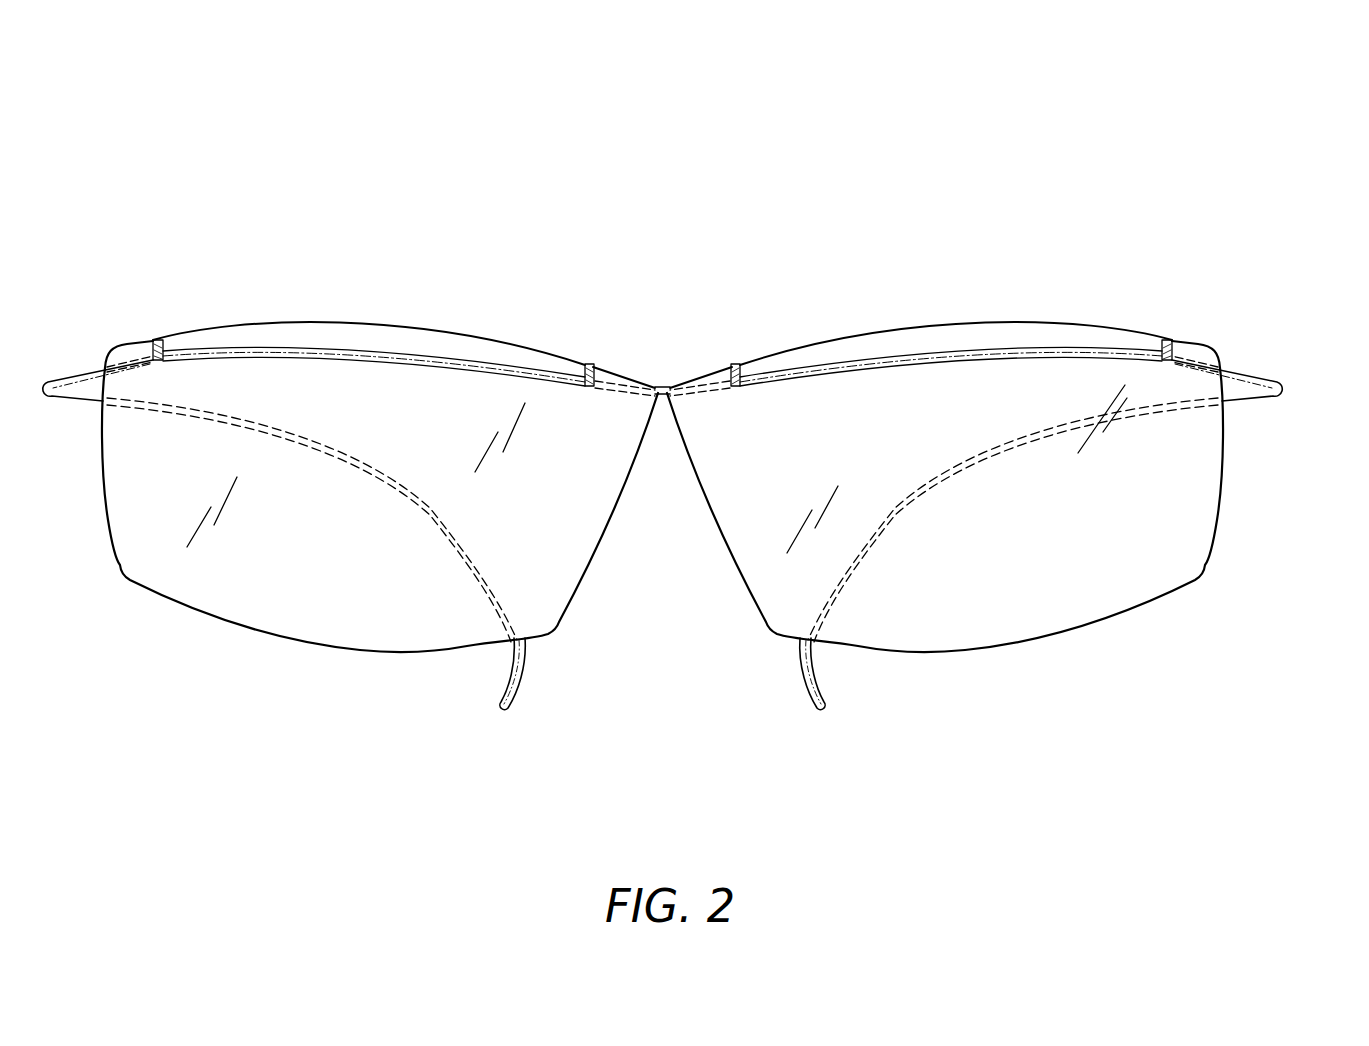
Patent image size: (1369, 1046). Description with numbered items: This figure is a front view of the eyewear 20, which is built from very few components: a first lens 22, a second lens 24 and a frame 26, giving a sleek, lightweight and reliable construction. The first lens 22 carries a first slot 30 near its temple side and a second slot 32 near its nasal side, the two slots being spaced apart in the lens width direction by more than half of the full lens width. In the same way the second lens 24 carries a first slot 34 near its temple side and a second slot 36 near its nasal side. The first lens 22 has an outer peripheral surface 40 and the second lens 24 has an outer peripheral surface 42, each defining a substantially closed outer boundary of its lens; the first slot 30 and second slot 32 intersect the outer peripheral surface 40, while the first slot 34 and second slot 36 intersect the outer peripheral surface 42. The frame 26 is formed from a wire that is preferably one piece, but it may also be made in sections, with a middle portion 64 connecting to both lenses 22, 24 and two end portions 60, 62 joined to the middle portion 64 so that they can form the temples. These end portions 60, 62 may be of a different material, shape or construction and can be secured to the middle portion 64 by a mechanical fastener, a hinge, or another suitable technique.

The eyewear 20 is at (1076, 130).
The first lens 22 is at (285, 600).
The second lens 24 is at (1040, 600).
The frame 26 is at (1279, 363).
The first slot 30 is at (151, 340).
The second slot 32 is at (588, 364).
The first slot 34 is at (736, 364).
The second slot 36 is at (1172, 340).
The outer peripheral surface 40 is at (327, 321).
The outer peripheral surface 42 is at (940, 322).
The end portion 60 is at (493, 687).
The end portion 62 is at (832, 687).
The middle portion 64 is at (794, 356).